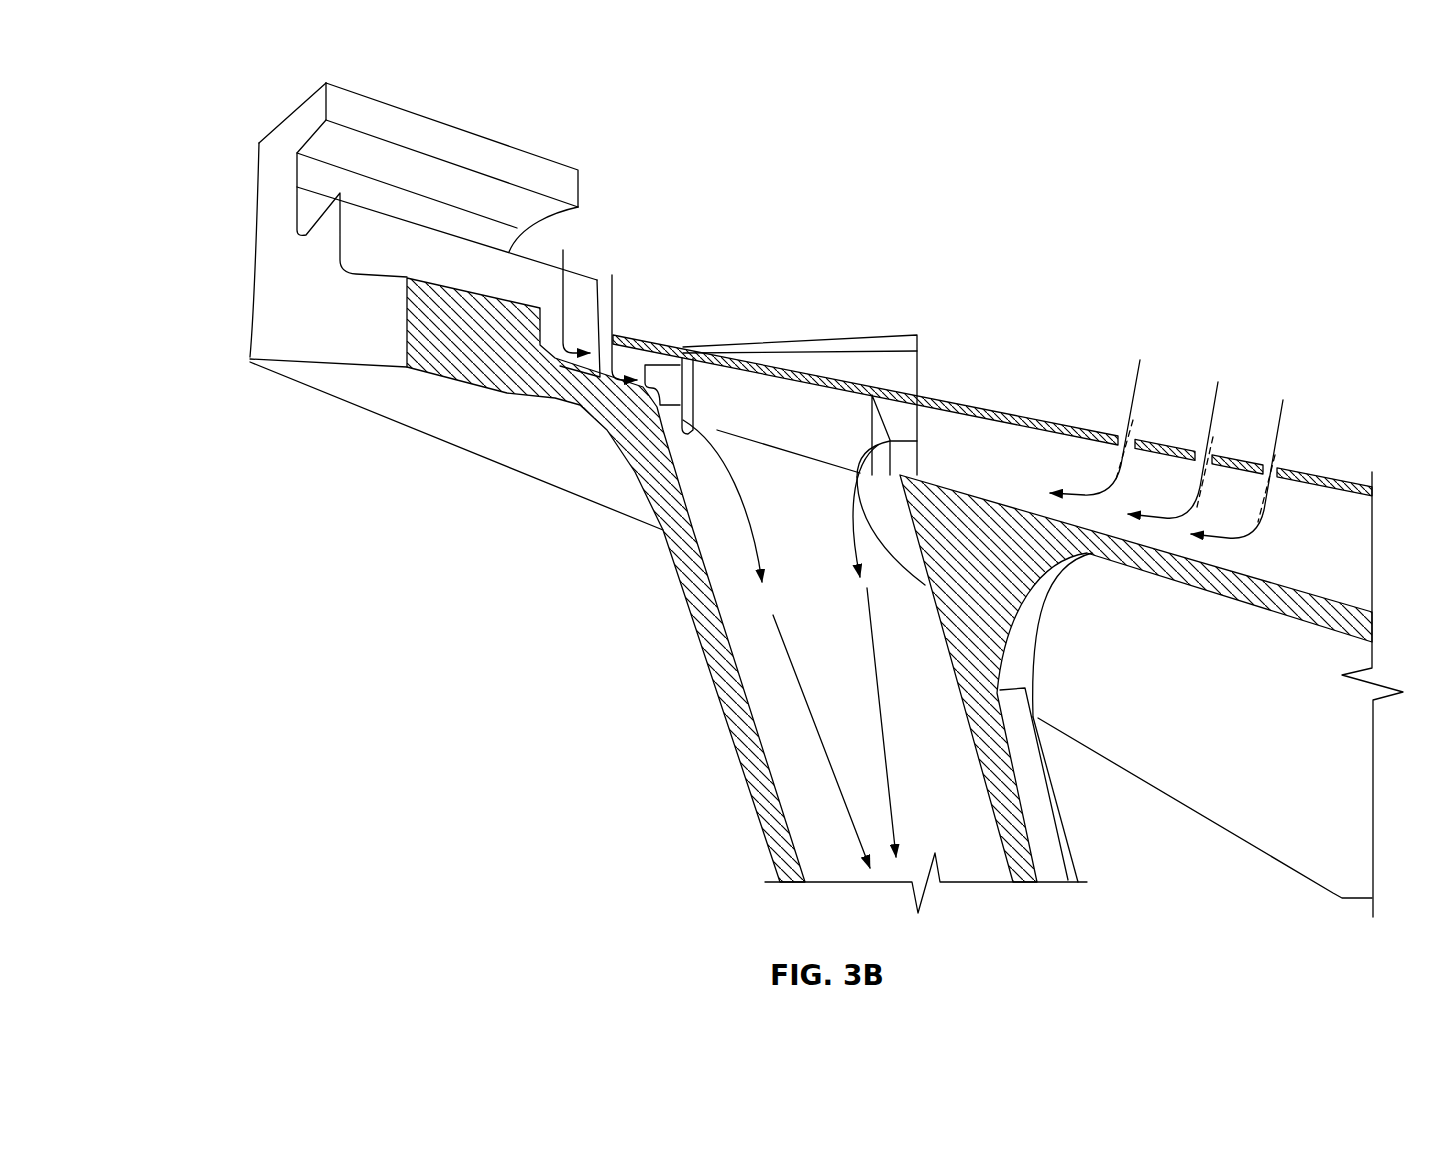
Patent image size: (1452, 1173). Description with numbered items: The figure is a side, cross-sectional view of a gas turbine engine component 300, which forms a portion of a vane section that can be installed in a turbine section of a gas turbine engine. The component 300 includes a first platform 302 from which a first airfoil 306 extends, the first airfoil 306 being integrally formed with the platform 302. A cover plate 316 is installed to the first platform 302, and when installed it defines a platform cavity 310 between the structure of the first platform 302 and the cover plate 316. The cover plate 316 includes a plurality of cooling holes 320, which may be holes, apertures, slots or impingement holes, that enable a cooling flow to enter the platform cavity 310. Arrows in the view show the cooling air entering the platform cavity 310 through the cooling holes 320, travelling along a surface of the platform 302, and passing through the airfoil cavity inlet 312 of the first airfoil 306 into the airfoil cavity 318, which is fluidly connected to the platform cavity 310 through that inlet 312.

The gas turbine engine component 300 is at (216, 101).
The first platform 302 is at (250, 357).
The first airfoil 306 is at (740, 788).
The platform cavity 310 is at (543, 330).
The airfoil cavity inlet 312 is at (717, 529).
The cover plate 316 is at (637, 335).
The airfoil cavity 318 is at (850, 605).
The cooling holes 320 is at (576, 307).